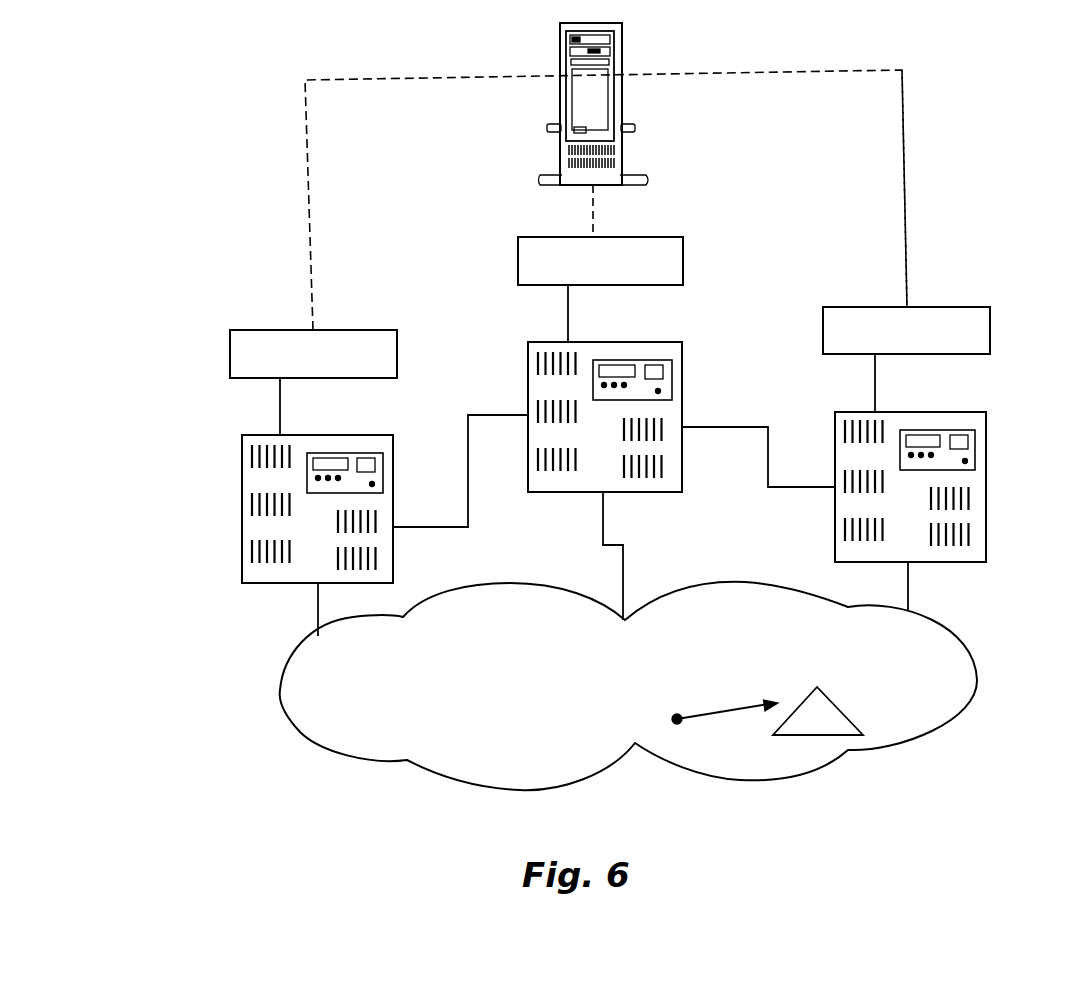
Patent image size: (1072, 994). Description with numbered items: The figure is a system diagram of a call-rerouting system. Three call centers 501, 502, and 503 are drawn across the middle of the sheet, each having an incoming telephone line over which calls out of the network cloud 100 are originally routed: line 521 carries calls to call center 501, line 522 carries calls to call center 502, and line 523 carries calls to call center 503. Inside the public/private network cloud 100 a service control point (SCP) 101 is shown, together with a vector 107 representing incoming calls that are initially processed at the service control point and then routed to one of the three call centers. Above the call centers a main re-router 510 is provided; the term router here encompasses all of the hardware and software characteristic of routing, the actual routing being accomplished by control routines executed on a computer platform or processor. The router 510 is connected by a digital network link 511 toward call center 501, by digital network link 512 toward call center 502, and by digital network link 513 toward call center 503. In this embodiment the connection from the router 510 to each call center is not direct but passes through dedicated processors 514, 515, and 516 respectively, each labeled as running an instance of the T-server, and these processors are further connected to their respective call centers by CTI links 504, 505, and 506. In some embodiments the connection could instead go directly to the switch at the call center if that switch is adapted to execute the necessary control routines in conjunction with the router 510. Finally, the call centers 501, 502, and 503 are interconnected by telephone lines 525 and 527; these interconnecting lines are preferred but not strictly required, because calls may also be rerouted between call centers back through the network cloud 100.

The network cloud 100 is at (297, 730).
The service control point (SCP) 101 is at (817, 687).
The vector 107 is at (715, 710).
The call center 501 is at (242, 502).
The call center 502 is at (682, 392).
The call center 503 is at (986, 505).
The CTI link 504 is at (280, 410).
The CTI link 505 is at (568, 312).
The CTI link 506 is at (875, 395).
The main re-router 510 is at (560, 65).
The digital network link 511 is at (307, 222).
The digital network link 512 is at (590, 213).
The digital network link 513 is at (902, 188).
The dedicated processor 514 is at (230, 358).
The dedicated processor 515 is at (518, 265).
The dedicated processor 516 is at (887, 307).
The line 521 is at (318, 615).
The line 522 is at (625, 577).
The line 523 is at (908, 578).
The telephone line 525 is at (470, 499).
The telephone line 527 is at (803, 488).